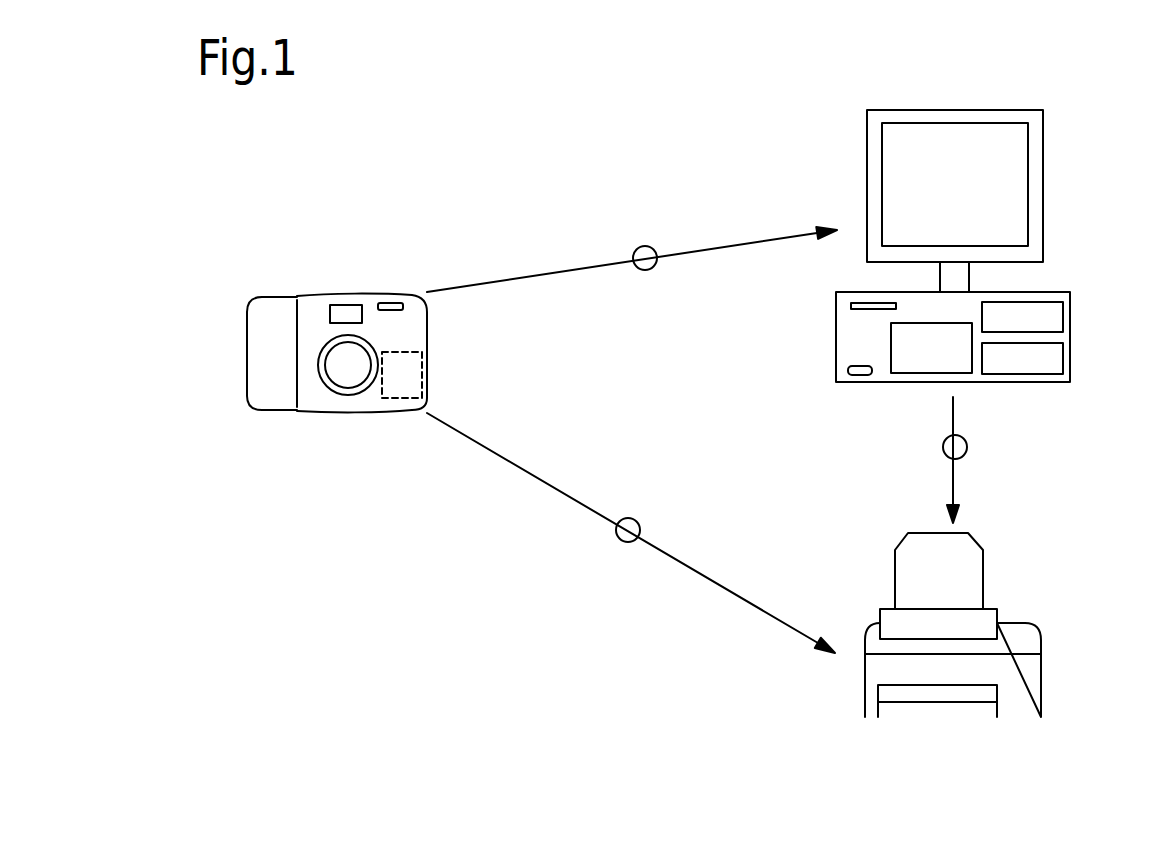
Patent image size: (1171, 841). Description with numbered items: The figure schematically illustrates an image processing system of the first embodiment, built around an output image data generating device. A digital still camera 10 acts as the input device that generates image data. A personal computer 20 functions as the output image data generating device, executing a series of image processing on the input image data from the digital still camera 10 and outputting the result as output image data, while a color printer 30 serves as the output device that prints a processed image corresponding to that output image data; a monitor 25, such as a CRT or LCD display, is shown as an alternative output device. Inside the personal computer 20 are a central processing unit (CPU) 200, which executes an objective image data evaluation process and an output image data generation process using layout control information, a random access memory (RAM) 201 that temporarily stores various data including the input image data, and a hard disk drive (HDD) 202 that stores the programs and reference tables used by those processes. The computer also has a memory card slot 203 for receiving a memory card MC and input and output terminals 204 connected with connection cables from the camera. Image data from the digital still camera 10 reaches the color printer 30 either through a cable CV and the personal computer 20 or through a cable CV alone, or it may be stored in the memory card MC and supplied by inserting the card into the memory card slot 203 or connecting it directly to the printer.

The digital still camera 10 is at (330, 295).
The memory card MC is at (410, 374).
The cable CV is at (641, 246).
The personal computer 20 is at (1068, 261).
The monitor 25 is at (1043, 188).
The central processing unit (CPU) 200 is at (1058, 343).
The random access memory (RAM) 201 is at (1058, 299).
The hard disk drive (HDD) 202 is at (903, 373).
The memory card slot 203 is at (860, 300).
The input and output terminals 204 is at (855, 366).
The color printer 30 is at (1010, 623).